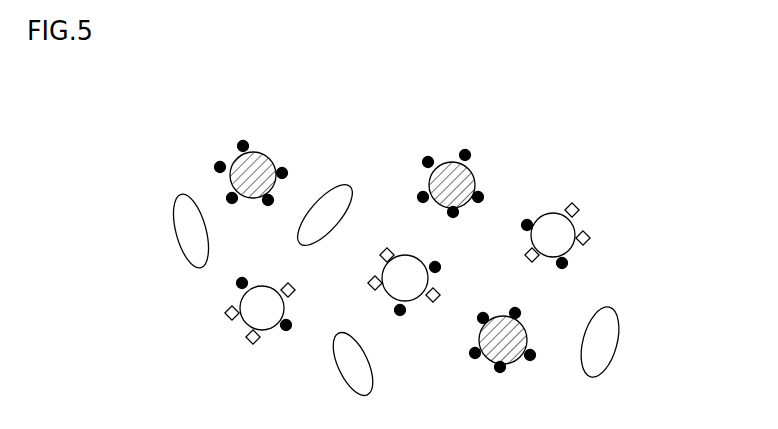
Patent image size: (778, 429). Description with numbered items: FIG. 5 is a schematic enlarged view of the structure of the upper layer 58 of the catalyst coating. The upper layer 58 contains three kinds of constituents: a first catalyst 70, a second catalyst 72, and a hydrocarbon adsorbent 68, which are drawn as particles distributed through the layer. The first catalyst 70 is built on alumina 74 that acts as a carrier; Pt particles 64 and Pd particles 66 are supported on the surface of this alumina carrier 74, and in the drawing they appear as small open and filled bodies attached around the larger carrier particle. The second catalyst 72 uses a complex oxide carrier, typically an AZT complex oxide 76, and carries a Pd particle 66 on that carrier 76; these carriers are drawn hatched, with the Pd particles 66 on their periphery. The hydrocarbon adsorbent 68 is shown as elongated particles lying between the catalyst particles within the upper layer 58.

The upper layer 58 is at (657, 102).
The Pt particle 64 is at (578, 208).
The Pd particle 66 is at (237, 147).
The hydrocarbon adsorbent 68 is at (612, 338).
The first catalyst 70 is at (592, 256).
The second catalyst 72 is at (492, 152).
The alumina 74 is at (250, 323).
The AZT complex oxide 76 is at (268, 153).